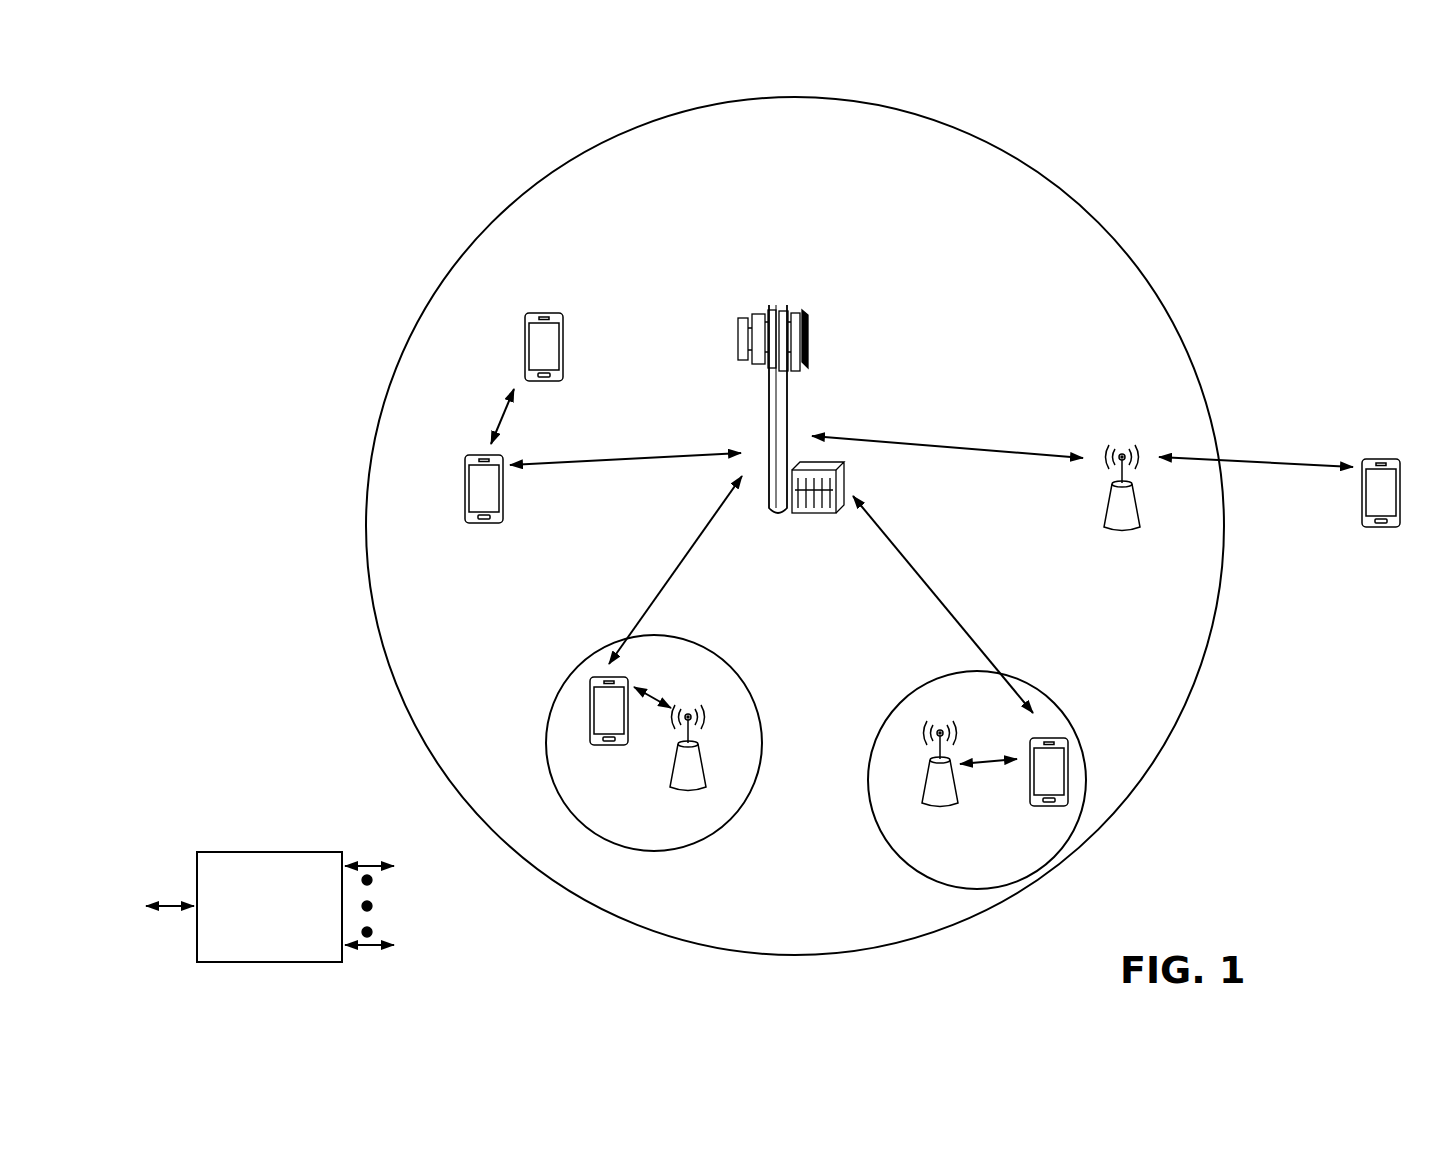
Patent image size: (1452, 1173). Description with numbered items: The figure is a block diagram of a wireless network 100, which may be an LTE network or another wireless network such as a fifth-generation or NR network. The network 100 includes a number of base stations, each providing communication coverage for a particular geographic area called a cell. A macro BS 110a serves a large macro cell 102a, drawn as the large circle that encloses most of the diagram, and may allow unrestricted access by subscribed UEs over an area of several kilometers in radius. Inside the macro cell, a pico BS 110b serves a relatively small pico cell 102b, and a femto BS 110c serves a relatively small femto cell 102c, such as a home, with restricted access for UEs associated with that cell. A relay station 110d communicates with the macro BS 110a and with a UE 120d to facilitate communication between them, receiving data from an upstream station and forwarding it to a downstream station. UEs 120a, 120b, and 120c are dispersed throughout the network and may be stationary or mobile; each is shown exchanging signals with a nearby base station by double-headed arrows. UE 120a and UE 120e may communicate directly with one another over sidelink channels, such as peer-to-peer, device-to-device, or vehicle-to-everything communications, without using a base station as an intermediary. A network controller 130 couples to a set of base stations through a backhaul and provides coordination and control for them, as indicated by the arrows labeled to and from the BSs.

The wireless network 100 is at (248, 90).
The macro cell 102a is at (1085, 200).
The pico cell 102b is at (739, 675).
The femto cell 102c is at (912, 690).
The macro BS 110a is at (784, 291).
The pico BS 110b is at (707, 770).
The femto BS 110c is at (927, 790).
The relay station 110d is at (1122, 450).
The UE 120a is at (464, 494).
The UE 120b is at (597, 746).
The UE 120c is at (1041, 808).
The UE 120d is at (1394, 458).
The UE 120e is at (523, 331).
The network controller 130 is at (269, 850).